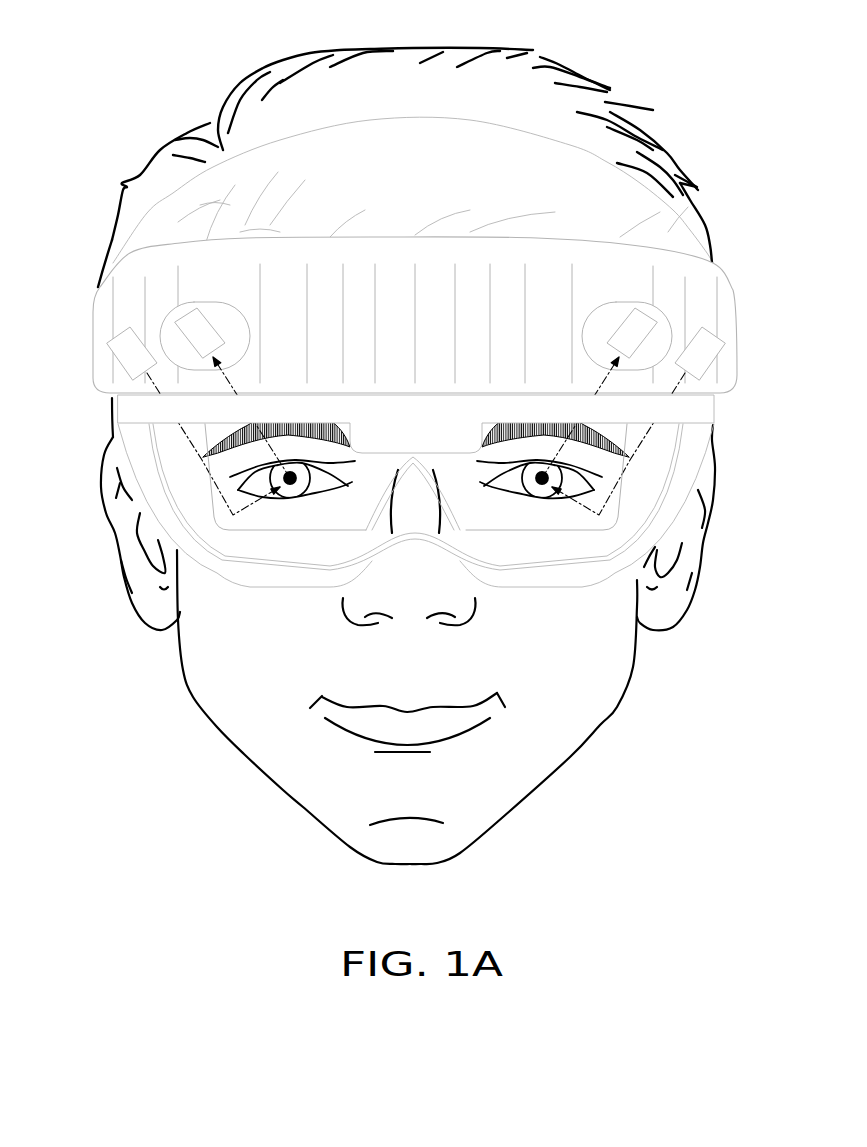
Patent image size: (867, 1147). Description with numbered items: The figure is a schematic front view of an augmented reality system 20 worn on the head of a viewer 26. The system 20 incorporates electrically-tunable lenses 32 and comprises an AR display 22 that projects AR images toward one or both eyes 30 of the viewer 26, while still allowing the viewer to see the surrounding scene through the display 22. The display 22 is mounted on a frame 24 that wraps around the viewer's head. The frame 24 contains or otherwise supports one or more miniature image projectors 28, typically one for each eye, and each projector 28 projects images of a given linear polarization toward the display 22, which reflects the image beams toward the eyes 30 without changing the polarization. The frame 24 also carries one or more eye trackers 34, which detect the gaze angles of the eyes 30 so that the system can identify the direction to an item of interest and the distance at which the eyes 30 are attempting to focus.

The AR system 20 is at (410, 351).
The AR display 22 is at (416, 544).
The frame 24 is at (97, 292).
The viewer 26 is at (406, 444).
The miniature image projector 28 is at (117, 355).
The eye 30 is at (316, 490).
The electrically-tunable lens 32 is at (272, 530).
The eye tracker 34 is at (200, 317).